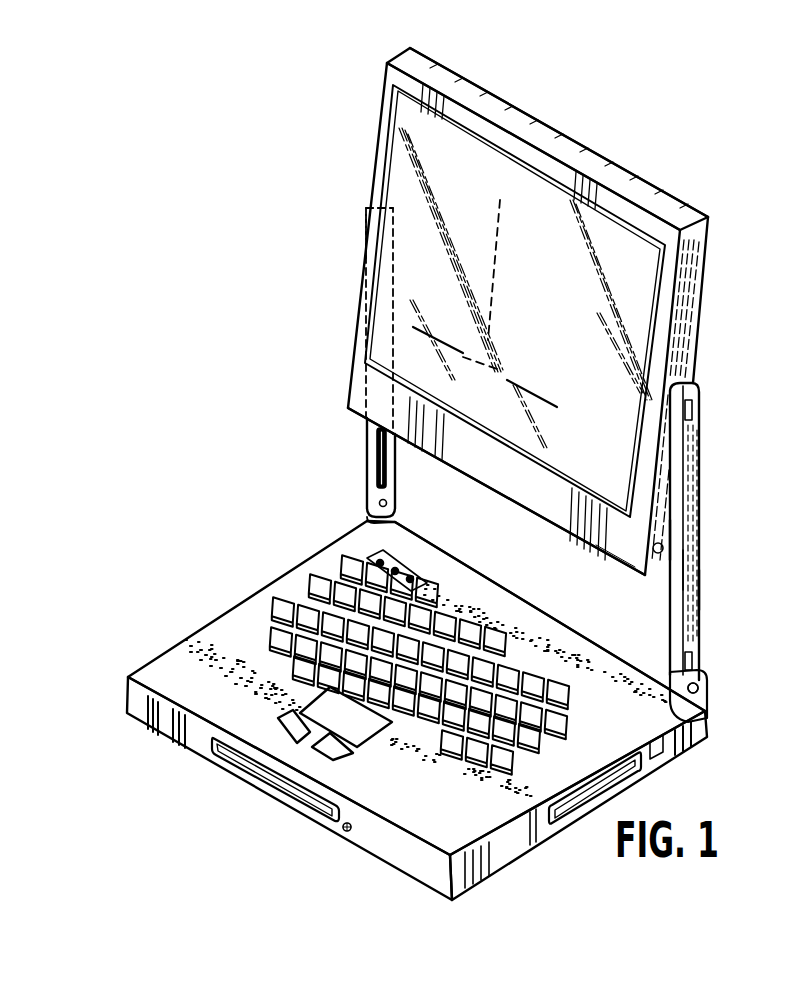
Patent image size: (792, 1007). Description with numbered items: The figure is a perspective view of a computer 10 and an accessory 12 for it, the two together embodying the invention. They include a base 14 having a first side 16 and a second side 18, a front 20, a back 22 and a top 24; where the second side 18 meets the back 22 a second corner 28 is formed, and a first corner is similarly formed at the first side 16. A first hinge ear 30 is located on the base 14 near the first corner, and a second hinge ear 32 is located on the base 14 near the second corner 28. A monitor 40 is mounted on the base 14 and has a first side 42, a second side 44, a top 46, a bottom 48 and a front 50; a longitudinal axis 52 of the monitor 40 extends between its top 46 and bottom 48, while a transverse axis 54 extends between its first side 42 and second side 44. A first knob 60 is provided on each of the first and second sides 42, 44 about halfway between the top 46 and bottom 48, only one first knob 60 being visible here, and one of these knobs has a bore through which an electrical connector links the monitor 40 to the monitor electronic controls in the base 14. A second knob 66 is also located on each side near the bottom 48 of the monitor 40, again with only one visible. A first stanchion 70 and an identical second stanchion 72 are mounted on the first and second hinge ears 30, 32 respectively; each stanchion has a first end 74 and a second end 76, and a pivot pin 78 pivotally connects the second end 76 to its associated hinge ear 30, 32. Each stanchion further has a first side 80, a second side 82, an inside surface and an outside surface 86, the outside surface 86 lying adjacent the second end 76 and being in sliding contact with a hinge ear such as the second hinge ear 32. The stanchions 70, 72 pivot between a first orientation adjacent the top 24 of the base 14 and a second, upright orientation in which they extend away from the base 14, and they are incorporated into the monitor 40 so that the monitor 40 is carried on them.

The computer 10 is at (330, 121).
The accessory 12 is at (367, 182).
The base 14 is at (655, 778).
The first side 16 is at (275, 583).
The second side 18 is at (658, 758).
The front 20 is at (343, 832).
The back 22 is at (584, 636).
The top 24 is at (385, 840).
The second corner 28 is at (392, 521).
The first hinge ear 30 is at (528, 563).
The second hinge ear 32 is at (696, 677).
The monitor 40 is at (706, 265).
The first side 42 is at (386, 72).
The second side 44 is at (685, 300).
The top 46 is at (652, 195).
The bottom 48 is at (508, 498).
The front 50 is at (593, 544).
The longitudinal axis 52 is at (497, 228).
The transverse axis 54 is at (508, 382).
The first knob 60 is at (658, 405).
The second knob 66 is at (670, 536).
The first stanchion 70 is at (367, 227).
The second stanchion 72 is at (698, 471).
The first end 74 is at (368, 197).
The second end 76 is at (372, 488).
The pivot pin 78 is at (378, 503).
The first side 80 is at (672, 566).
The second side 82 is at (699, 588).
The outside surface 86 is at (688, 617).